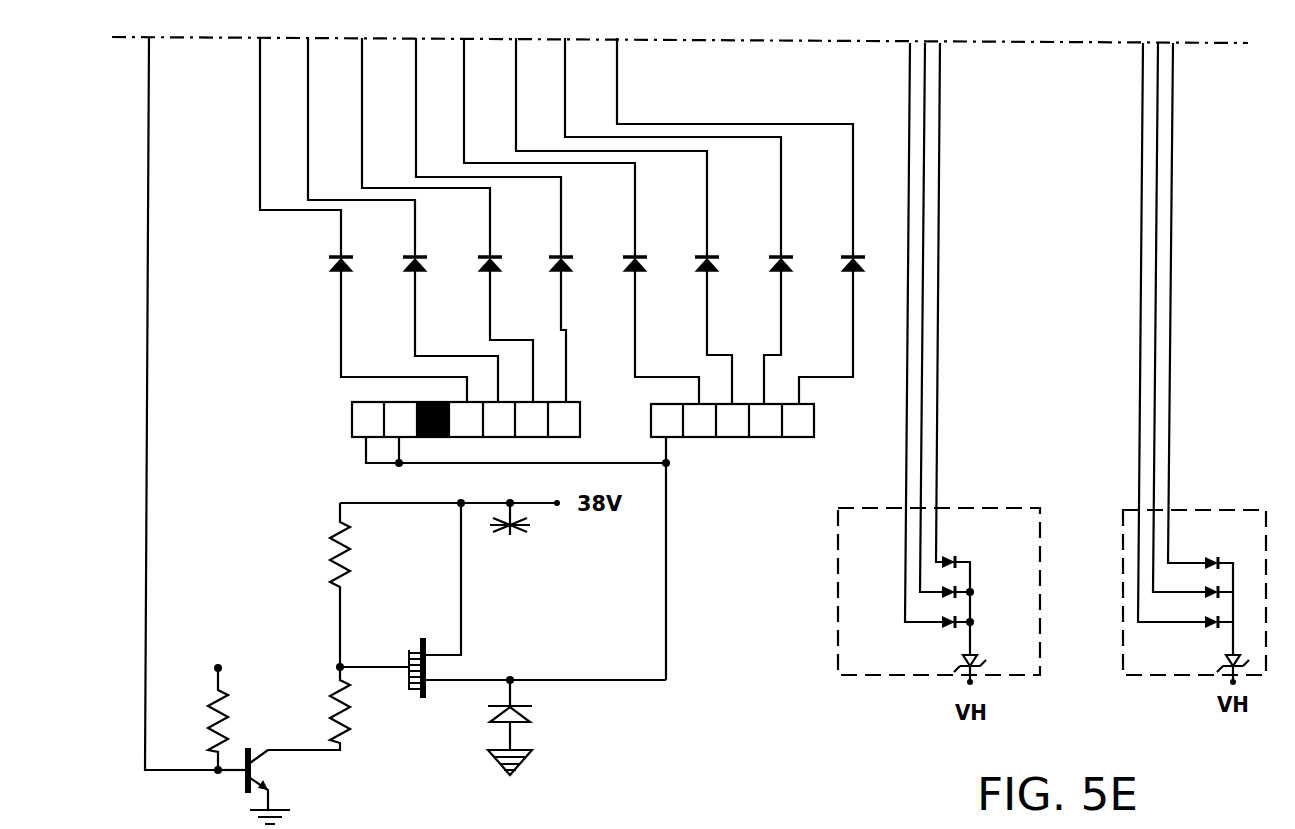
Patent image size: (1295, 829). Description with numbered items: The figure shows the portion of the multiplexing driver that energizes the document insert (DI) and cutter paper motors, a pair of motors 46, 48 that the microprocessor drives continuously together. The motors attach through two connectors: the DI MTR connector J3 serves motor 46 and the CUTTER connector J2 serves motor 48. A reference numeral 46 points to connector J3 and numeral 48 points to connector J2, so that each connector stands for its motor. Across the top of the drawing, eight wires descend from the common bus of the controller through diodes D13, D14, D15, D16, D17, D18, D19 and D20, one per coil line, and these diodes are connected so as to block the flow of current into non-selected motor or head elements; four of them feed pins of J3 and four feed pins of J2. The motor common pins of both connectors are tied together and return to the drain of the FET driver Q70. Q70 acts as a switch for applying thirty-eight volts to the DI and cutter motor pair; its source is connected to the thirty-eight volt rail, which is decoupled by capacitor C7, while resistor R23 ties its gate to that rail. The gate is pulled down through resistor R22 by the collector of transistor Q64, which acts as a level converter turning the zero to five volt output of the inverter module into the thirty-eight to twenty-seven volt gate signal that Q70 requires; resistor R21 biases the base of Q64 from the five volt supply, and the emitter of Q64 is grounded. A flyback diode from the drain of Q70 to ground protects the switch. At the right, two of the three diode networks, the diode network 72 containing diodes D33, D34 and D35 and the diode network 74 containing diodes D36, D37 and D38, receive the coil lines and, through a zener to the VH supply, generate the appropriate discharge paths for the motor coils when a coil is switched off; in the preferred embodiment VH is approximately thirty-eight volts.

The motor 46 is at (577, 403).
The motor 48 is at (815, 425).
The diode network 72 is at (1011, 505).
The diode network 74 is at (1202, 507).
The diode D13 is at (363, 220).
The diode D14 is at (403, 220).
The diode D15 is at (447, 220).
The diode D16 is at (494, 220).
The diode D17 is at (581, 221).
The diode D18 is at (624, 221).
The diode D19 is at (679, 221).
The diode D20 is at (741, 221).
The diode D33 is at (935, 351).
The diode D34 is at (976, 332).
The diode D35 is at (964, 317).
The diode D36 is at (1185, 354).
The diode D37 is at (1193, 332).
The diode D38 is at (1207, 317).
The resistor R21 is at (243, 704).
The resistor R22 is at (341, 708).
The resistor R23 is at (373, 585).
The capacitor C7 is at (532, 528).
The level converter Q64 is at (272, 786).
The FET driver Q70 is at (501, 610).
The cutter connector J2 is at (714, 439).
The DI motor connector J3 is at (414, 417).